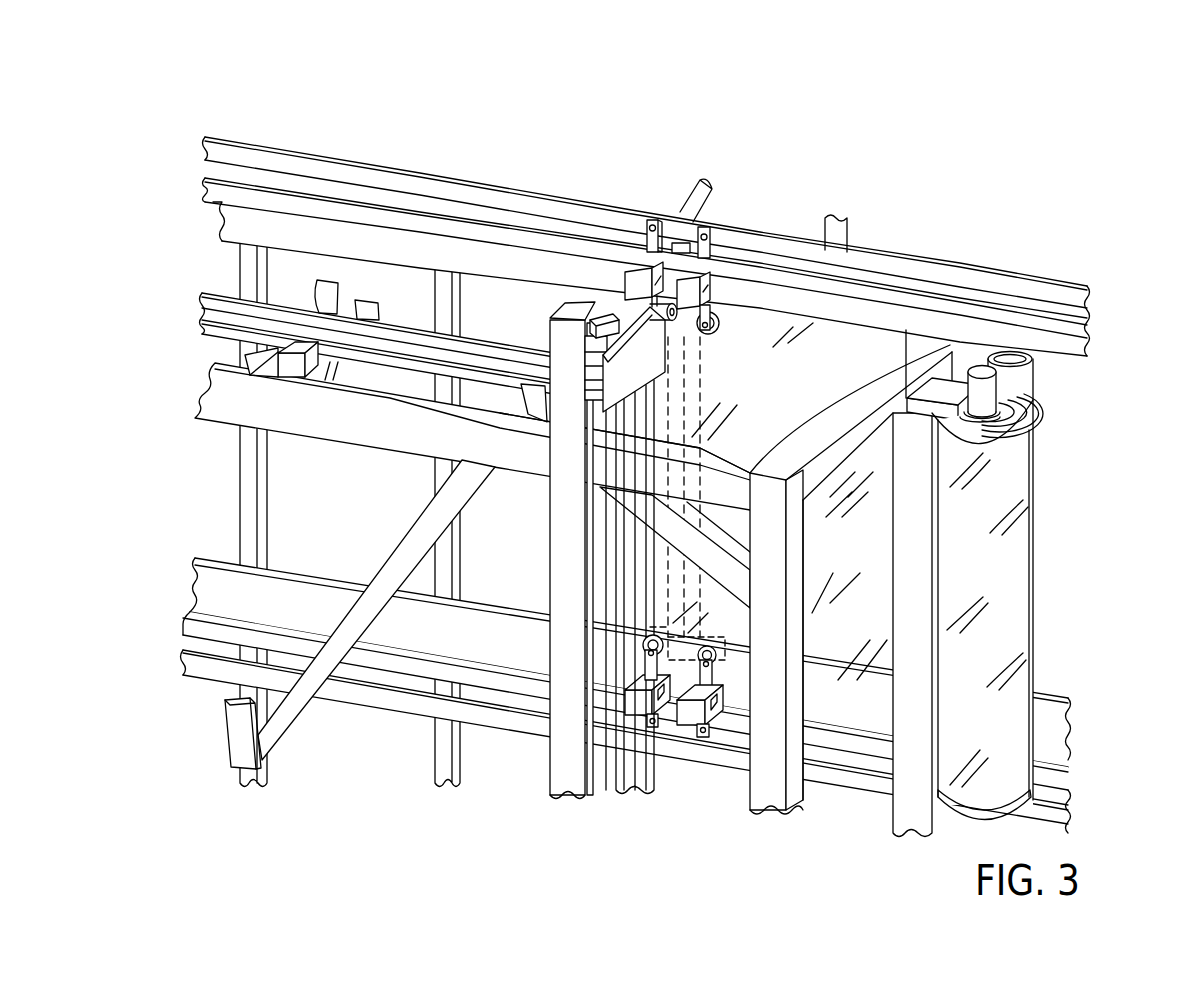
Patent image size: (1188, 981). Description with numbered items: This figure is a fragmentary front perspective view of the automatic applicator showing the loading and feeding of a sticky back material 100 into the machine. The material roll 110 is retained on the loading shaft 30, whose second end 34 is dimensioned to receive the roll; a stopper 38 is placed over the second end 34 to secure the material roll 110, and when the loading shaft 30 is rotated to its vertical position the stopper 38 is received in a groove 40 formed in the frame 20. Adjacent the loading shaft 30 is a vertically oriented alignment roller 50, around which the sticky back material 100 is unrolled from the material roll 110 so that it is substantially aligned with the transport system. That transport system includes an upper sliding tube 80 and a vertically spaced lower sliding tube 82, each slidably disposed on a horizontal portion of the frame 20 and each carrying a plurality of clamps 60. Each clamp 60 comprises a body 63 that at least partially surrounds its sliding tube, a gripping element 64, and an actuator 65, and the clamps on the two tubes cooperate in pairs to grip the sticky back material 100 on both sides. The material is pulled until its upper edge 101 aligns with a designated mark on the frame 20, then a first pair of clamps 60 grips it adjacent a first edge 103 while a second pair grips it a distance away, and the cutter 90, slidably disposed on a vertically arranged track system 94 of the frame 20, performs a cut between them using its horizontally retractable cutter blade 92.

The frame 20 is at (362, 246).
The loading shaft 30 is at (1037, 388).
The second end 34 is at (982, 368).
The stopper 38 is at (1030, 413).
The groove 40 is at (1023, 447).
The alignment roller 50 is at (1013, 360).
The clamp 60 is at (640, 286).
The body 63 is at (735, 270).
The gripping element 64 is at (763, 307).
The actuator 65 is at (750, 300).
The upper sliding tube 80 is at (881, 292).
The lower sliding tube 82 is at (722, 688).
The cutter 90 is at (565, 305).
The cutter blade 92 is at (625, 318).
The track system 94 is at (595, 712).
The sticky back material 100 is at (777, 380).
The upper edge 101 is at (866, 317).
The first edge 103 is at (638, 588).
The material roll 110 is at (1017, 543).